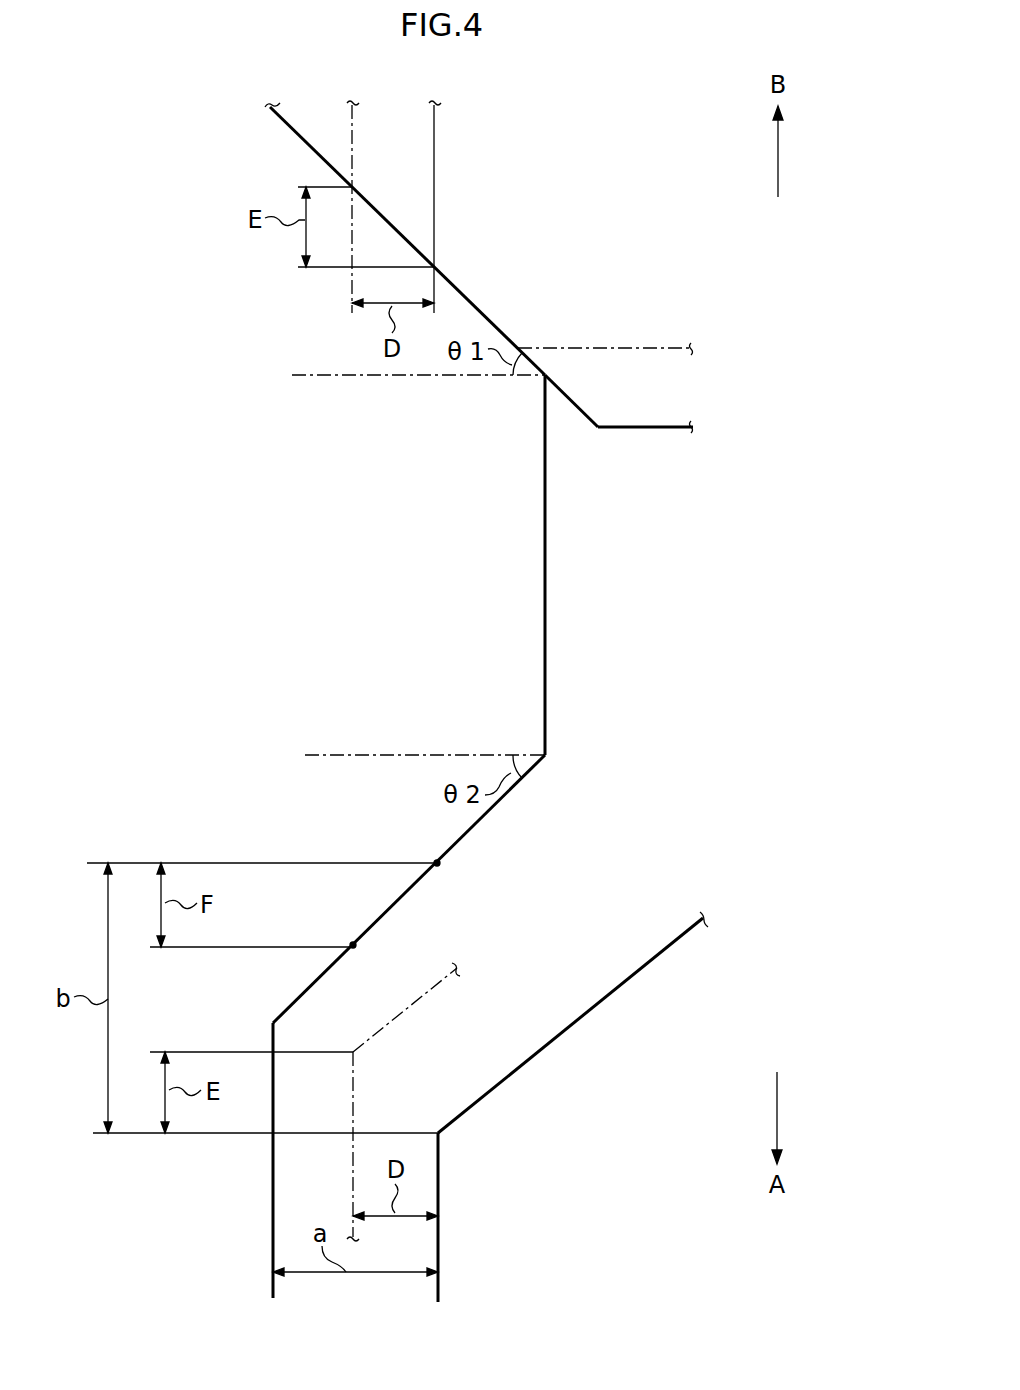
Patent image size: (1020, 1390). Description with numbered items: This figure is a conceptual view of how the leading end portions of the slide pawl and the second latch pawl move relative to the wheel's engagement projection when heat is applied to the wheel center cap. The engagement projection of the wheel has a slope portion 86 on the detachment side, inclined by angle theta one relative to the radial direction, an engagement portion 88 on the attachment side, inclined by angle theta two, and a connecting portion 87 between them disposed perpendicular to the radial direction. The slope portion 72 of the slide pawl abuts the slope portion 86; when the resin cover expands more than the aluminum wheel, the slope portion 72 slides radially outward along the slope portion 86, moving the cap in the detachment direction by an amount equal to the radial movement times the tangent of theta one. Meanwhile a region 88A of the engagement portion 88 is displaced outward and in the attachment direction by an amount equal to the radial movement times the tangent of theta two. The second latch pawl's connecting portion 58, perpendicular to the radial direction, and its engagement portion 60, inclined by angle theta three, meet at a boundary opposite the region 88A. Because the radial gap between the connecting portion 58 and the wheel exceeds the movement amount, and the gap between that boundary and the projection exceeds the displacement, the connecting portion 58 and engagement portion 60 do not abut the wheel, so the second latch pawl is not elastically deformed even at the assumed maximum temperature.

The slope portion 86 is at (470, 298).
The slope portion 72 is at (488, 320).
The connecting portion 87 is at (545, 590).
The engagement portion 88 is at (497, 803).
The region of the engagement portion 88A is at (440, 863).
The engagement portion 60 is at (578, 1008).
The connecting portion 58 is at (443, 1168).